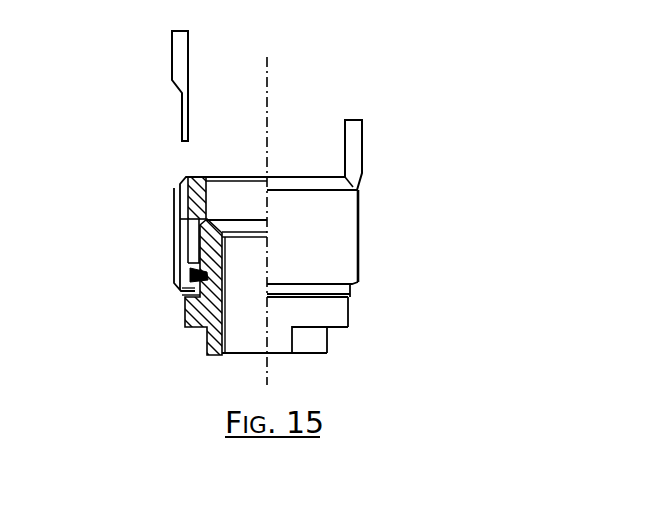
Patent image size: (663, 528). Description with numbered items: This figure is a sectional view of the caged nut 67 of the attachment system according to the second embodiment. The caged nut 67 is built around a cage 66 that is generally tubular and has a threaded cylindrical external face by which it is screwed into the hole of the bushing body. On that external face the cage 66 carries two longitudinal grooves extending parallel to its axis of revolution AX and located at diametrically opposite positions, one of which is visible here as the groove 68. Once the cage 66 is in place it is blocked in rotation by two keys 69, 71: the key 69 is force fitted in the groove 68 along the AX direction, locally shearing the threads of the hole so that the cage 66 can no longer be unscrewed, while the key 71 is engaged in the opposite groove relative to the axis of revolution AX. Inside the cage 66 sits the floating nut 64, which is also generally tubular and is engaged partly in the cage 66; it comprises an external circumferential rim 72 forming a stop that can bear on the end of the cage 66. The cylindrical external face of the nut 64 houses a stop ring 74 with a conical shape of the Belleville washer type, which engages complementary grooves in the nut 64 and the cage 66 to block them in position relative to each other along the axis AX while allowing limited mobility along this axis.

The floating nut 64 is at (328, 342).
The cage 66 is at (333, 243).
The caged nut 67 is at (115, 166).
The longitudinal groove 68 is at (184, 228).
The key 69 is at (172, 54).
The key 71 is at (352, 139).
The external circumferential rim 72 is at (338, 312).
The stop ring 74 is at (190, 275).
The axis of revolution AX is at (268, 72).